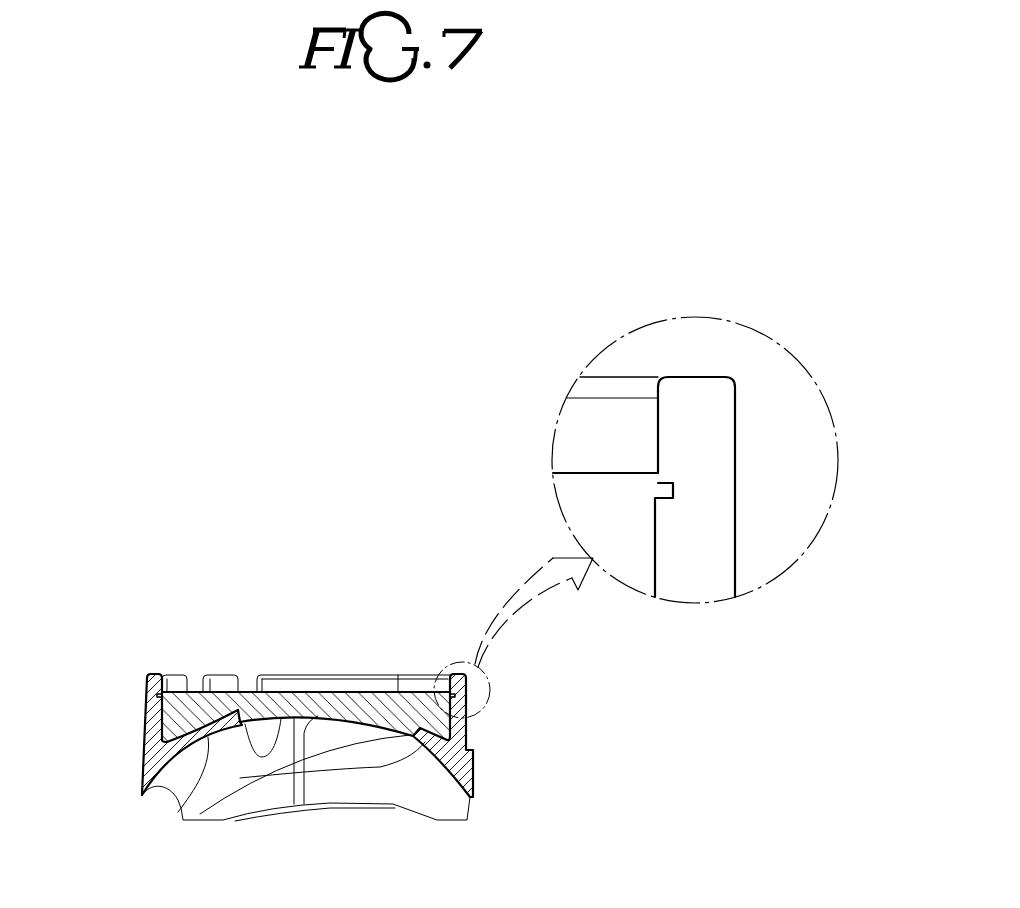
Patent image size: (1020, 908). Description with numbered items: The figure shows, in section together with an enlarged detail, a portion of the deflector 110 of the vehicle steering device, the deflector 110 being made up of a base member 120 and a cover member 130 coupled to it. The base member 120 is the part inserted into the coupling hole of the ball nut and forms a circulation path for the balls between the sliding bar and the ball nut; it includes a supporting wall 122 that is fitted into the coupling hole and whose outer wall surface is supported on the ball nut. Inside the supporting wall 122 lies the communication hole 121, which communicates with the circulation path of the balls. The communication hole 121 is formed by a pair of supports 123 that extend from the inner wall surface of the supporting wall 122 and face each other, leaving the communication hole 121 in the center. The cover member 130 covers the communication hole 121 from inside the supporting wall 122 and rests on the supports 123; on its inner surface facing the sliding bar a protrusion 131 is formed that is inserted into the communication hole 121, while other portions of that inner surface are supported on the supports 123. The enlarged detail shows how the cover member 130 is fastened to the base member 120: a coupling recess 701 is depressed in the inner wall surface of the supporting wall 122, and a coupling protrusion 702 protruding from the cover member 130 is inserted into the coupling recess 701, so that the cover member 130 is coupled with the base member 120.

The deflector 110 is at (92, 567).
The base member 120 is at (124, 778).
The communication hole 121 is at (264, 718).
The supporting wall 122 is at (146, 697).
The support 123 is at (209, 737).
The cover member 130 is at (329, 681).
The protrusion 131 is at (383, 717).
The coupling recess 701 is at (660, 488).
The coupling protrusion 702 is at (668, 492).